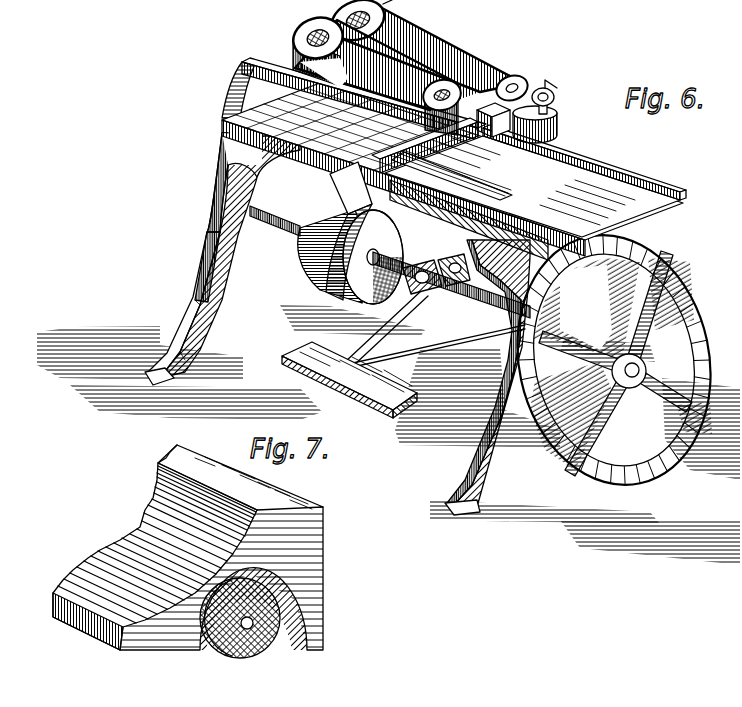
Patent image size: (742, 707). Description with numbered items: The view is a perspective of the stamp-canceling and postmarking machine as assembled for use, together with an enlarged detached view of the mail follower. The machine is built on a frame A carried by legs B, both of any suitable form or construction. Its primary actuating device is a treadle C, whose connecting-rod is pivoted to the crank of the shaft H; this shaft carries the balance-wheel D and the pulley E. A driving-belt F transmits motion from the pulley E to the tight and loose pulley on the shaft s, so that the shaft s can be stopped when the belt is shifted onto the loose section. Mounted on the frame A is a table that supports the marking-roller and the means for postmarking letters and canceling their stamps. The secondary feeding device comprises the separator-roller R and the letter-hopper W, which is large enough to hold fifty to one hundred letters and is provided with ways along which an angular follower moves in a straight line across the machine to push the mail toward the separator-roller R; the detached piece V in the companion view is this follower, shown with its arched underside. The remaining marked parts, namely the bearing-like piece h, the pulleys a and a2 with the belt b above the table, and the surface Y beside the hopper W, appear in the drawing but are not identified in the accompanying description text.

In FIG. 6, the frame A is at (258, 64).
In FIG. 6, the legs B is at (337, 288).
In FIG. 6, the treadle C is at (350, 380).
In FIG. 6, the balance-wheel D is at (614, 360).
In FIG. 6, the pulley E is at (320, 218).
In FIG. 6, the driving-belt F is at (350, 251).
In FIG. 6, the shaft H is at (390, 289).
In FIG. 6, the bearing h is at (450, 266).
In FIG. 6, the separator-roller R is at (532, 121).
In FIG. 6, the shaft s is at (544, 86).
In FIG. 6, the drum a is at (375, 86).
In FIG. 6, the pulley a2 is at (366, 60).
In FIG. 6, the belt b is at (413, 55).
In FIG. 6, the platform Y is at (526, 177).
In FIG. 6, the letter-hopper W is at (584, 175).
In FIG. 7, the block V is at (188, 551).